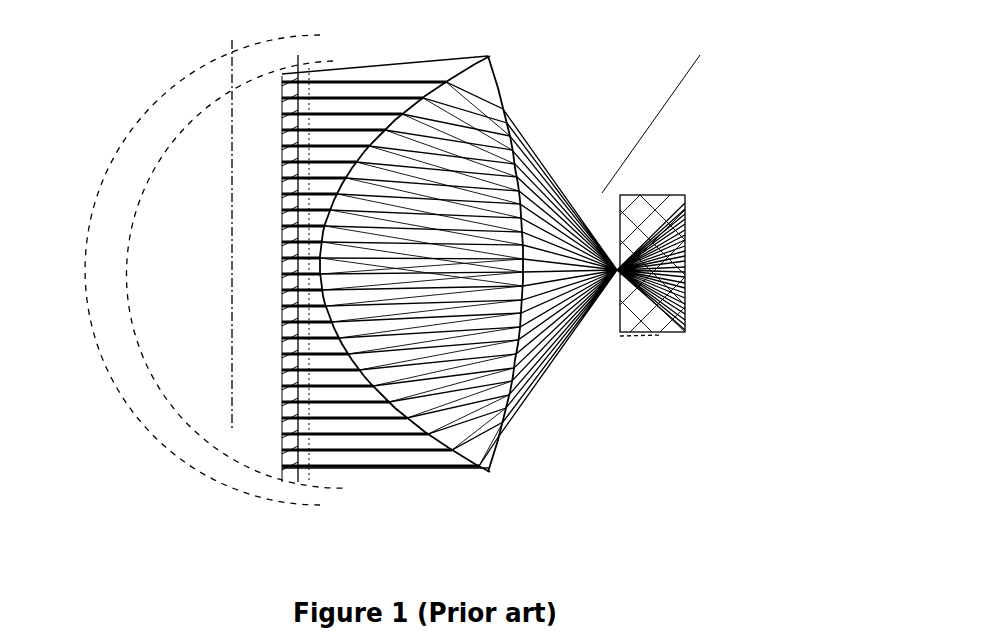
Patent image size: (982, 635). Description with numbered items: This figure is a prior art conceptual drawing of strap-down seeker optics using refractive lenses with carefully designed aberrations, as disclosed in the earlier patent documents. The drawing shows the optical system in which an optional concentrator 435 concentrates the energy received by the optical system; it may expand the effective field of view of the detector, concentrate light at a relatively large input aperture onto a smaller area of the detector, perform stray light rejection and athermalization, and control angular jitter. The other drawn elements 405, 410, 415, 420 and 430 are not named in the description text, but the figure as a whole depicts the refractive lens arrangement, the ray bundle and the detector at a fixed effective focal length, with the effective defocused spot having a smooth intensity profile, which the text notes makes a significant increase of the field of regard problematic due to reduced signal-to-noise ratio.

The dome window 405 is at (118, 370).
The grating filter 410 is at (284, 418).
The lens 415 is at (313, 432).
The light rays 420 is at (472, 358).
The detector 430 is at (690, 243).
The concentrator 435 is at (661, 340).